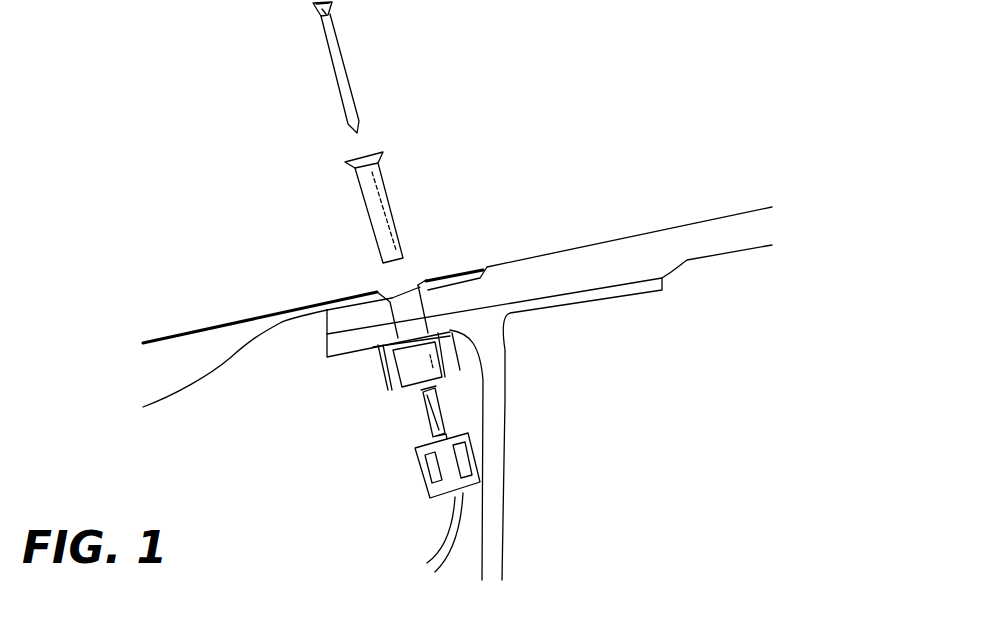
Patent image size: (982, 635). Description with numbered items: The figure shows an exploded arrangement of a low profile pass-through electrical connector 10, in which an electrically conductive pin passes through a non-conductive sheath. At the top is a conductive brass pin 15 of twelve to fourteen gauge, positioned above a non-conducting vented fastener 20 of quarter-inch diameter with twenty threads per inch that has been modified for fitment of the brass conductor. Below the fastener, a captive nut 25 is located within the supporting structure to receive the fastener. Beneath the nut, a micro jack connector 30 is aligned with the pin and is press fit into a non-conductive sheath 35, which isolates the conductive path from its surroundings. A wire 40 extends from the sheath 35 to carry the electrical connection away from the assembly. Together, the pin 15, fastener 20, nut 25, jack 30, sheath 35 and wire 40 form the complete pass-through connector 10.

The low profile pass-through electrical connector 10 is at (237, 157).
The conductive brass pin 15 is at (348, 78).
The non-conducting vented fastener 20 is at (380, 200).
The captive nut 25 is at (403, 367).
The micro jack connector 30 is at (438, 404).
The non-conductive sheath 35 is at (430, 493).
The wire 40 is at (455, 518).